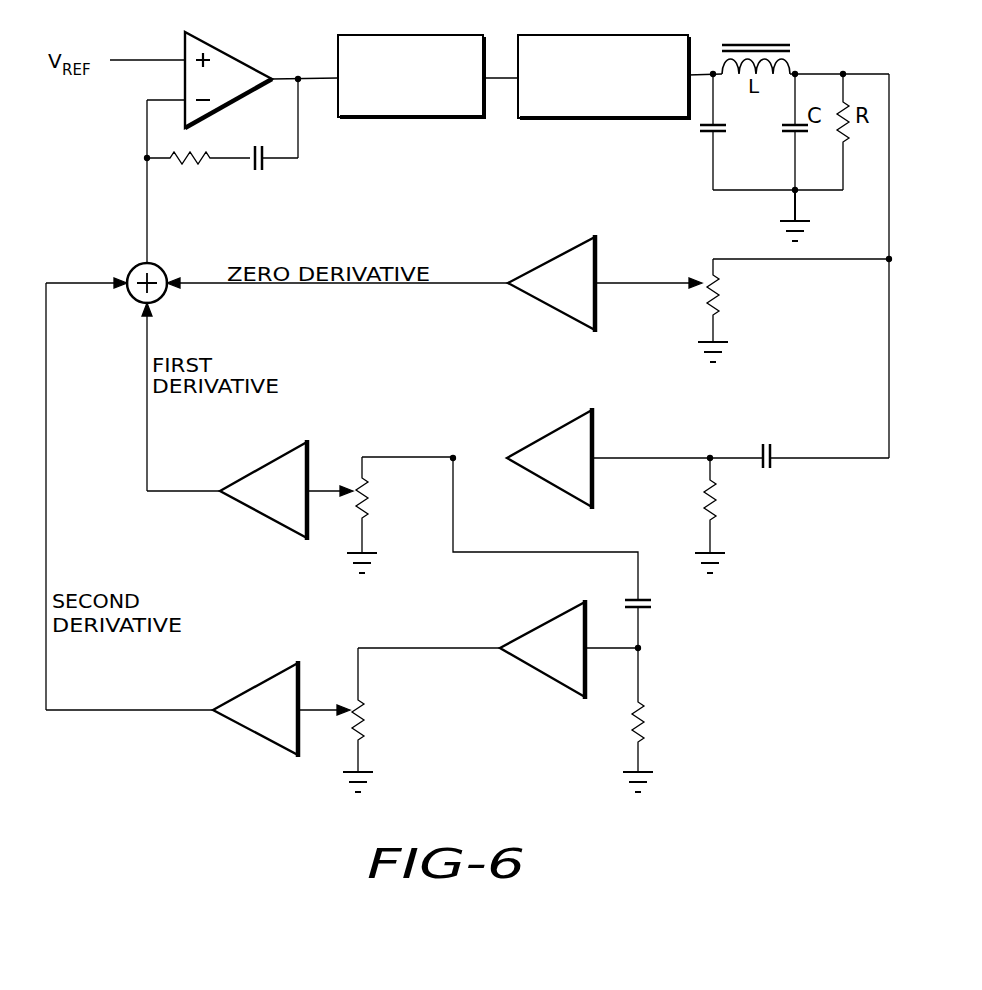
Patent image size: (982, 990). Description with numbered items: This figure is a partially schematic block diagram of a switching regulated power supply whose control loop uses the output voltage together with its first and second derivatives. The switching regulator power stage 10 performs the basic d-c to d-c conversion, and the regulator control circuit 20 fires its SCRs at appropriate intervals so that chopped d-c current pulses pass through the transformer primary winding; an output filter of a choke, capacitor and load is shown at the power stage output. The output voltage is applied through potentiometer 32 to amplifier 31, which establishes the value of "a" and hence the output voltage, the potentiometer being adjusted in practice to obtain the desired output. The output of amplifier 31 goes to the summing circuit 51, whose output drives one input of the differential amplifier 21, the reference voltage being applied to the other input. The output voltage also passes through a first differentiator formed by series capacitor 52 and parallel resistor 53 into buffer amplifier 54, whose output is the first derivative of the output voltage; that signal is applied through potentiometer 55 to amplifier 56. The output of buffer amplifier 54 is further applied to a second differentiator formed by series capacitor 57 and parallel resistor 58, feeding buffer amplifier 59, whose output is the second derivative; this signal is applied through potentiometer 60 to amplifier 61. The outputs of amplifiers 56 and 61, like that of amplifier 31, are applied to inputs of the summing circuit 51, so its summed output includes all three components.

The switching regulator power stage 10 is at (650, 34).
The regulator control circuit 20 is at (466, 34).
The differential amplifier 21 is at (258, 28).
The amplifier 31 is at (544, 245).
The potentiometer 32 is at (718, 277).
The summing circuit 51 is at (168, 268).
The series capacitor 52 is at (773, 446).
The parallel resistor 53 is at (718, 505).
The buffer amplifier 54 is at (556, 398).
The potentiometer 55 is at (368, 503).
The amplifier 56 is at (248, 474).
The series capacitor 57 is at (652, 610).
The parallel resistor 58 is at (677, 720).
The buffer amplifier 59 is at (548, 622).
The potentiometer 60 is at (399, 724).
The amplifier 61 is at (243, 667).